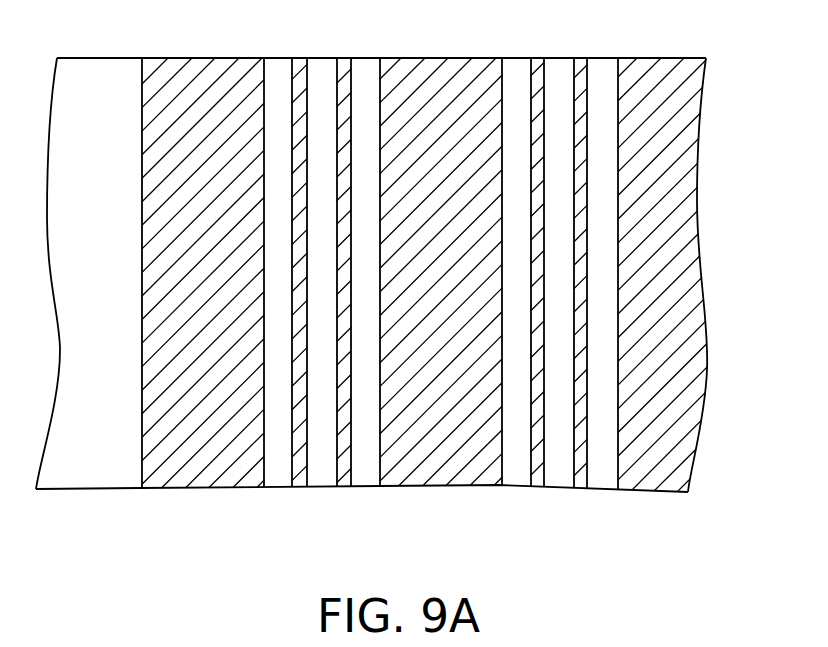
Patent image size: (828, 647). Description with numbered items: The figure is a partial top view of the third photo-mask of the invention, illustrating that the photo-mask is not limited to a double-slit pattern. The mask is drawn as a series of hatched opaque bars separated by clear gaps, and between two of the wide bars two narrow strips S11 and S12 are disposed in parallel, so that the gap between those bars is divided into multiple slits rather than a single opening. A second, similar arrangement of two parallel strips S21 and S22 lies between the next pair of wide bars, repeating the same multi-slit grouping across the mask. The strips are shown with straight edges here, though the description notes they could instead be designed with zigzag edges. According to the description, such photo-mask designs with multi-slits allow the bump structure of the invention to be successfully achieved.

The strip S11 is at (300, 477).
The strip S12 is at (345, 477).
The first slit of second slit group S21 is at (539, 477).
The second slit of second slit group S22 is at (583, 477).